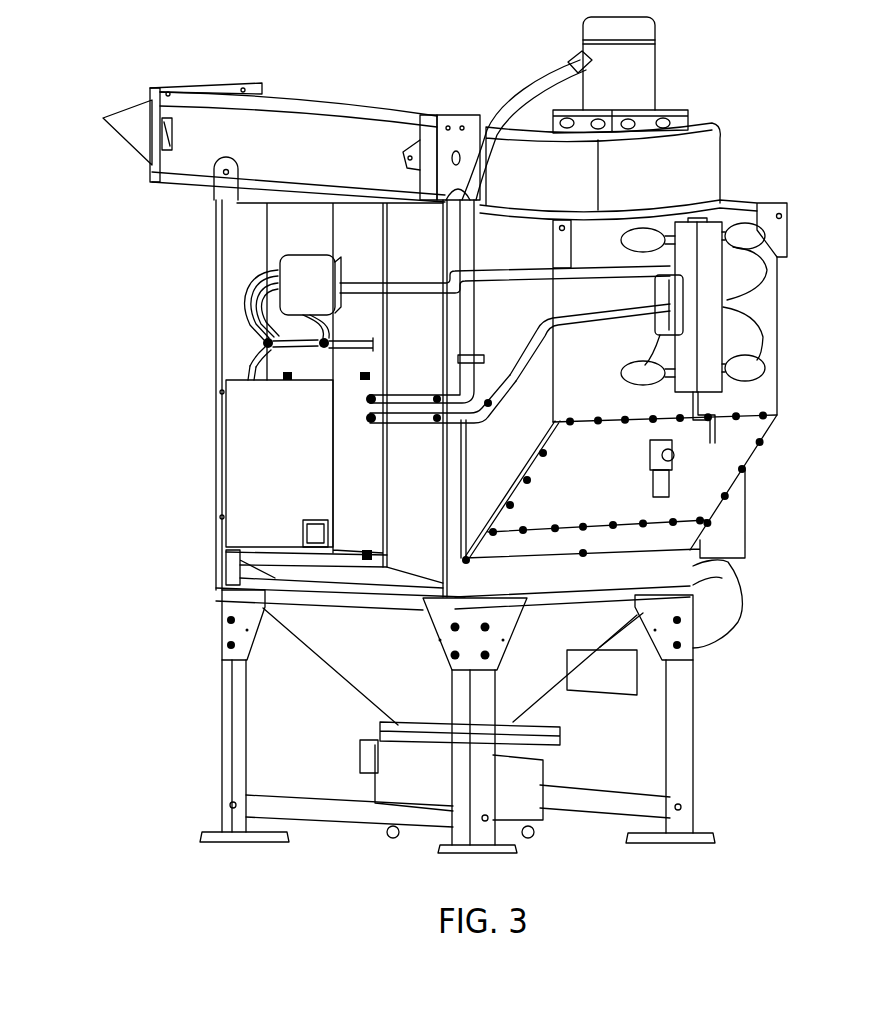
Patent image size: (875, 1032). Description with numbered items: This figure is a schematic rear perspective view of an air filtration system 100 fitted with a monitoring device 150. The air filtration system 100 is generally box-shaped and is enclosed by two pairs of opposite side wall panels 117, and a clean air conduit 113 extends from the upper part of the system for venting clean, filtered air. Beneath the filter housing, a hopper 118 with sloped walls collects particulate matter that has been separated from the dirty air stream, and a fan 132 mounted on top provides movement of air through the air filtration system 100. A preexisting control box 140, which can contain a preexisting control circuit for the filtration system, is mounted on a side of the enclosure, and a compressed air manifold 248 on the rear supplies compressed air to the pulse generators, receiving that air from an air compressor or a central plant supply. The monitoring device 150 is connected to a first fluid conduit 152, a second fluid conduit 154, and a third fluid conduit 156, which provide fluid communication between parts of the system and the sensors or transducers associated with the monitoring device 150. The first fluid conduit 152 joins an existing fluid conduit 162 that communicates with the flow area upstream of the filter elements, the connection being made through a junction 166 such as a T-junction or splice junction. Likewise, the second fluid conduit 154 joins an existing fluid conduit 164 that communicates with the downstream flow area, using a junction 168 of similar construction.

The air filtration system 100 is at (766, 96).
The clean air conduit 113 is at (308, 143).
The side wall panel 117 is at (368, 190).
The hopper 118 is at (353, 653).
The fan 132 is at (635, 75).
The control box 140 is at (267, 460).
The monitoring device 150 is at (303, 283).
The first fluid conduit 152 is at (257, 287).
The second fluid conduit 154 is at (260, 302).
The third fluid conduit 156 is at (650, 287).
The existing fluid conduit 162 is at (255, 347).
The existing fluid conduit 164 is at (257, 373).
The junction 166 is at (280, 342).
The junction 168 is at (328, 340).
The compressed air manifold 248 is at (710, 380).